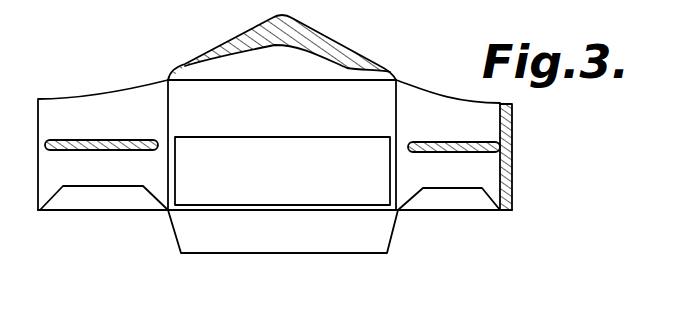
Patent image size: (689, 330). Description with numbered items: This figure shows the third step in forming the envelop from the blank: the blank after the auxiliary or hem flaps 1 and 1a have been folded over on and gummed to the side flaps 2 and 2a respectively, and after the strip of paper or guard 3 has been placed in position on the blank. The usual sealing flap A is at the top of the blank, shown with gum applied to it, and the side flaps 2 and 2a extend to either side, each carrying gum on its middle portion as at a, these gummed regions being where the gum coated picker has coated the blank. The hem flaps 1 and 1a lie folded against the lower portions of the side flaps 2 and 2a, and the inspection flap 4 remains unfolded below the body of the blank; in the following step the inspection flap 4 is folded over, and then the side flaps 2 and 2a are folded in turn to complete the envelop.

The auxiliary or hem flap 1 is at (75, 196).
The auxiliary or hem flap 1a is at (456, 197).
The side flap 2 is at (72, 99).
The side flap 2a is at (420, 90).
The strip of paper or guard 3 is at (328, 190).
The inspection flap 4 is at (278, 257).
The middle portion of the side flaps a is at (108, 143).
The sealing flap A is at (282, 47).